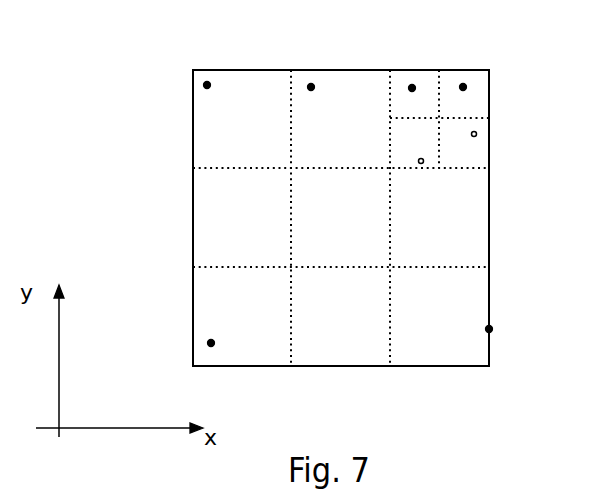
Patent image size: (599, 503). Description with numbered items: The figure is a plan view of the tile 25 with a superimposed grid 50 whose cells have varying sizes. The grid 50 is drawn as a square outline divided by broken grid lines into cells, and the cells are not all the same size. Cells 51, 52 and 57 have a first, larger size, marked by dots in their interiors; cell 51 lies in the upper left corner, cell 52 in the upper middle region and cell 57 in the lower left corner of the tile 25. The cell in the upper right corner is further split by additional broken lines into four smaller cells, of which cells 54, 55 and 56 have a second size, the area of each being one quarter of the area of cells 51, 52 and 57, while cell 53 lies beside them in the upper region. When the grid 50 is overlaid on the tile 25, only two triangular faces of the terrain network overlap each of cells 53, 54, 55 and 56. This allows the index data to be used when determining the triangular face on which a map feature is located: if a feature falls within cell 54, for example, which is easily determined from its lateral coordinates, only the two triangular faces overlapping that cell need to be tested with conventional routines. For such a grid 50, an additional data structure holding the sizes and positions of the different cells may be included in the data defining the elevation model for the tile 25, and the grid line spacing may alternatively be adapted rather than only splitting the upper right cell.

The grid 50 is at (496, 70).
The cell 51 is at (207, 85).
The cell 52 is at (311, 87).
The cell 53 is at (412, 88).
The cell 54 is at (463, 87).
The cell 55 is at (476, 134).
The cell 56 is at (424, 161).
The cell 57 is at (211, 343).
The tile 25 is at (489, 329).